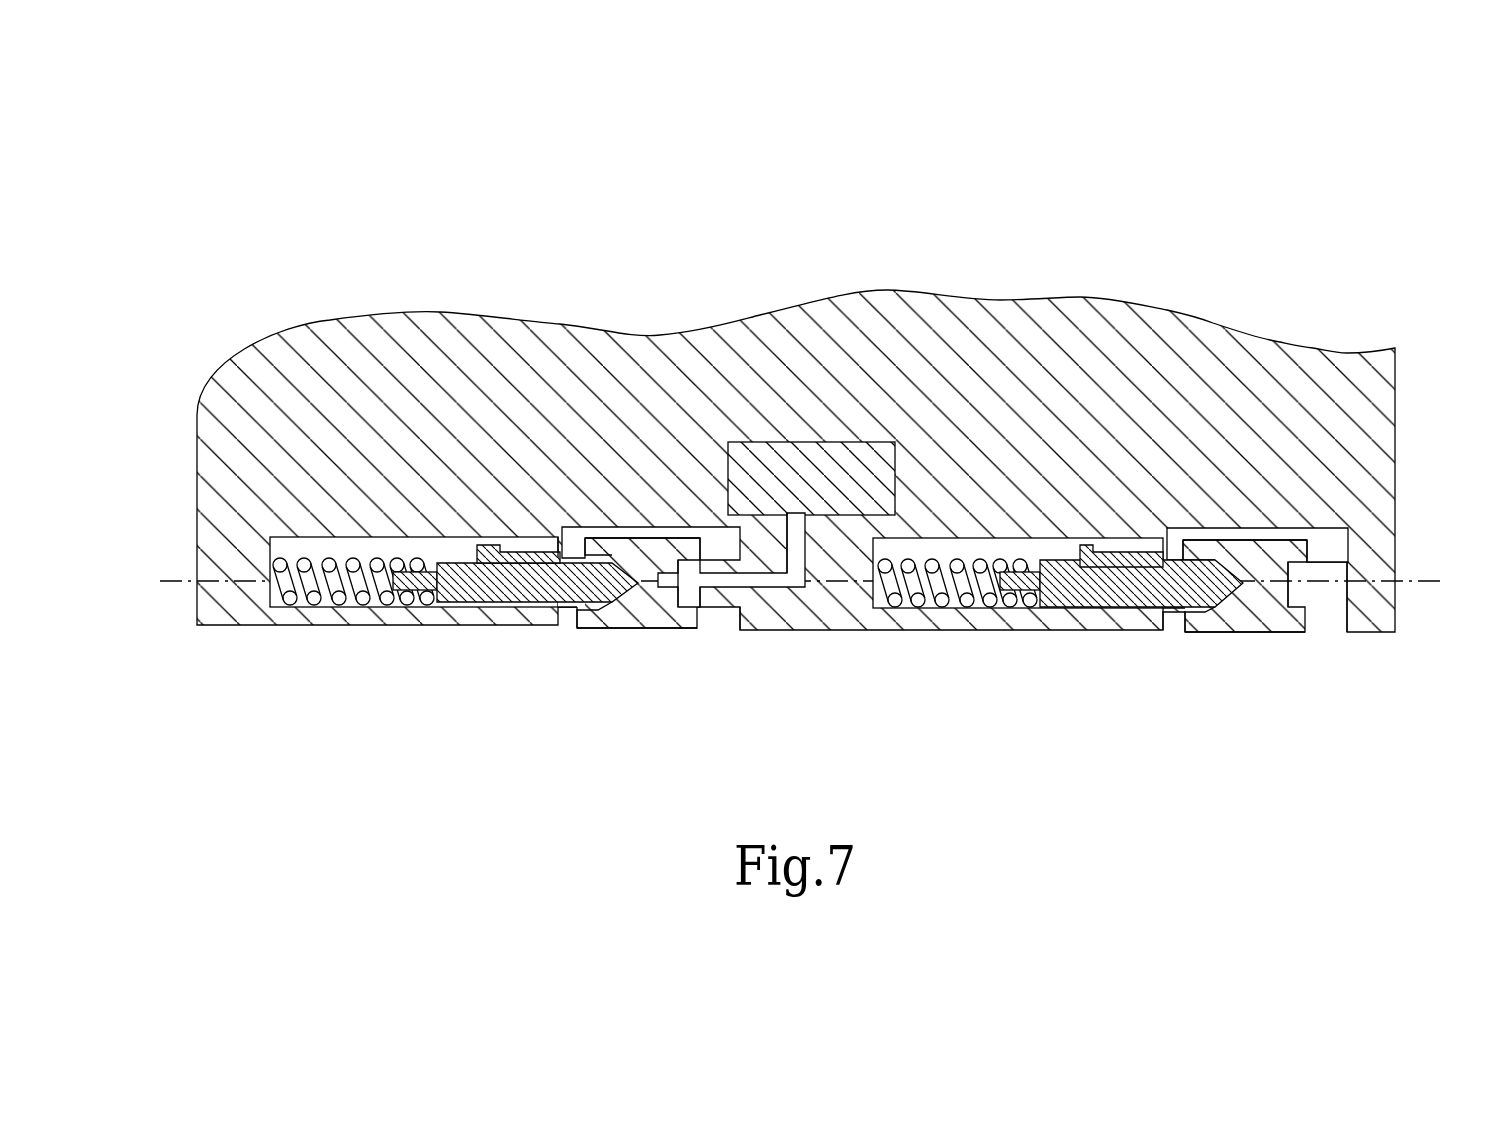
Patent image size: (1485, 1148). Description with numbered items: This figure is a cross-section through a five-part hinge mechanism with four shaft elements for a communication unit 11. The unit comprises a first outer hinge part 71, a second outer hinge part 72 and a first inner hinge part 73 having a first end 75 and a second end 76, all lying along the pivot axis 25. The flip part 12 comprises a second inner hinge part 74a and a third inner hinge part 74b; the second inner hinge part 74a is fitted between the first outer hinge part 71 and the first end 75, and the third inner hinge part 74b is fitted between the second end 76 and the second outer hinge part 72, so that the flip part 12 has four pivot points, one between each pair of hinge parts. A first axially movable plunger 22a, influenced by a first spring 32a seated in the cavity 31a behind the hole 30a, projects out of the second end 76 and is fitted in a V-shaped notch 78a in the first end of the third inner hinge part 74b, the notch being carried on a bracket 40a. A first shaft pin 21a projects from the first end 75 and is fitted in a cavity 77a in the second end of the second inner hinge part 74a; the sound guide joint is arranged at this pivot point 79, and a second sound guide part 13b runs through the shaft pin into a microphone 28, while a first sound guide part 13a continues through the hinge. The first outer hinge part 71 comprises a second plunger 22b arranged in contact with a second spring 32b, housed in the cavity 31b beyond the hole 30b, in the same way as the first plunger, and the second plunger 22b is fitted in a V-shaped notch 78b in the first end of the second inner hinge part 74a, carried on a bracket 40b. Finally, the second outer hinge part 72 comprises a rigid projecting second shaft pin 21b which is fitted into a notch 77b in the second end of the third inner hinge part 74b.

The housing body 11 is at (1397, 366).
The flip part 12 is at (593, 628).
The housing wall portion 13a is at (652, 545).
The second sound guide part 13b is at (797, 535).
The first shaft pin 21a is at (703, 597).
The second shaft pin 21b is at (1322, 593).
The first plunger 22a is at (1057, 607).
The second plunger 22b is at (493, 607).
The axis line 25 is at (178, 580).
The microphone 28 is at (782, 442).
The retainer plate 30a is at (1117, 552).
The retainer plate 30b is at (518, 545).
The coil spring 31a is at (978, 547).
The coil spring 31b is at (385, 548).
The first spring 32a is at (915, 622).
The second spring 32b is at (327, 607).
The bracket 40a is at (1173, 628).
The bracket 40b is at (570, 623).
The first outer hinge part 71 is at (378, 626).
The second outer hinge part 72 is at (1395, 632).
The first inner hinge part 73 is at (953, 630).
The second inner hinge part 74a is at (660, 628).
The third inner hinge part 74b is at (1205, 632).
The first end 75 is at (767, 630).
The second end 76 is at (1128, 608).
The cavity 77a is at (697, 537).
The notch 77b is at (1293, 560).
The V-shaped notch 78a is at (1185, 550).
The V-shaped notch 78b is at (590, 545).
The pivot point 79 is at (718, 540).